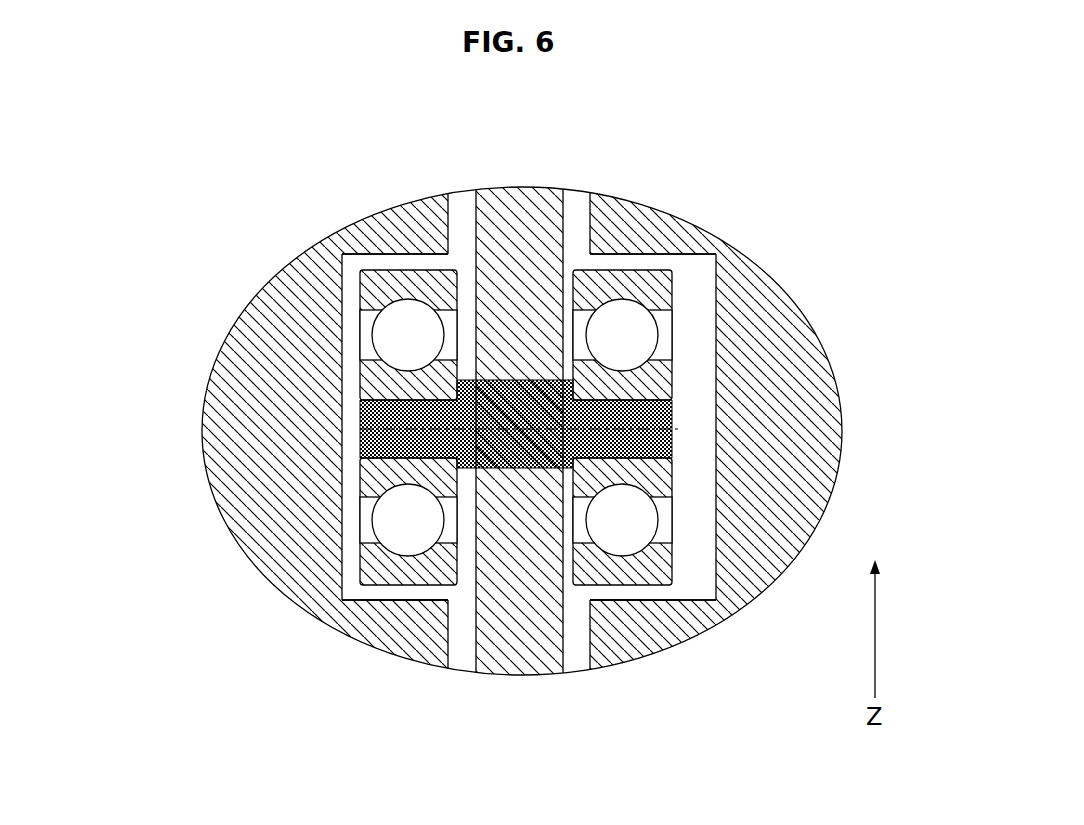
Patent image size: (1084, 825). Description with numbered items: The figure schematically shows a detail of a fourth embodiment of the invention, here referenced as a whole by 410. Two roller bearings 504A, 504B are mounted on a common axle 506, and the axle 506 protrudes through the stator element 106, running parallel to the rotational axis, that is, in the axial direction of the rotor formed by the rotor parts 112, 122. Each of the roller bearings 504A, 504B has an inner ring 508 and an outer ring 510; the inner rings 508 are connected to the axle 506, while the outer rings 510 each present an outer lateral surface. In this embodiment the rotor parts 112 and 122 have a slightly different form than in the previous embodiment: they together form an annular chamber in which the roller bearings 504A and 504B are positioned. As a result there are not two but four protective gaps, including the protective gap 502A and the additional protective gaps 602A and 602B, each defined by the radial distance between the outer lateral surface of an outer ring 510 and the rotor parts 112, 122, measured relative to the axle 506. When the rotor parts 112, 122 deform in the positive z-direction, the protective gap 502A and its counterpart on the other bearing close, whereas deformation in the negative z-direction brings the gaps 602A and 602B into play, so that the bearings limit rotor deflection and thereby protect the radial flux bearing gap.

The bearing assembly 410 is at (179, 368).
The stator element 106 is at (527, 260).
The rotor part 112 is at (287, 360).
The rotor part 122 is at (767, 370).
The protective gap 502A is at (373, 594).
The roller bearing 504A is at (399, 597).
The roller bearing 504B is at (630, 597).
The axle 506 is at (378, 440).
The inner ring 508 is at (372, 478).
The outer ring 510 is at (660, 293).
The protective gap 602A is at (417, 264).
The protective gap 602B is at (632, 260).